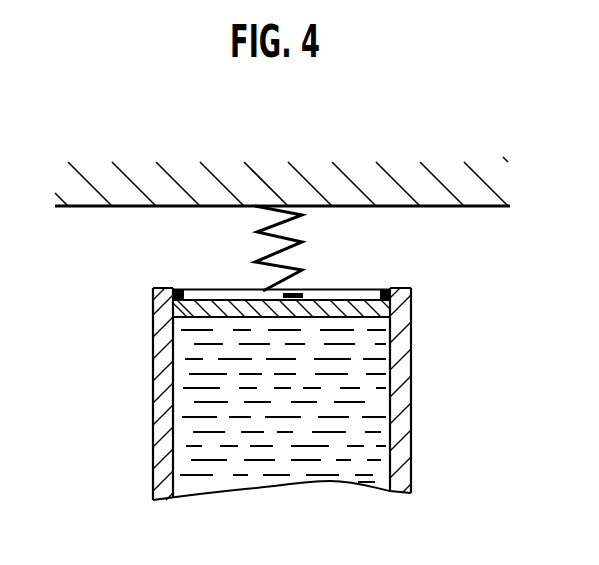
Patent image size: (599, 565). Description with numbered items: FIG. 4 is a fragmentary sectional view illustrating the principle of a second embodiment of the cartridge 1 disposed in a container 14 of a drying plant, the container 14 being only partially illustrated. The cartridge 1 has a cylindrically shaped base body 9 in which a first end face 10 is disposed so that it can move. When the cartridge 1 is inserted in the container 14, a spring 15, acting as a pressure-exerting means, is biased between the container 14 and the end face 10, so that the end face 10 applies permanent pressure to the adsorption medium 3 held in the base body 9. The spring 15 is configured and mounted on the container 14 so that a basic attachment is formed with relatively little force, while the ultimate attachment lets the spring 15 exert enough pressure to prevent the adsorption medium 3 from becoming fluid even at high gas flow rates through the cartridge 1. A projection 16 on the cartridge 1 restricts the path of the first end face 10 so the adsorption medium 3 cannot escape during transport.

The cartridge 1 is at (299, 362).
The adsorption medium 3 is at (187, 415).
The base body 9 is at (402, 453).
The first end face 10 is at (343, 302).
The container 14 is at (338, 182).
The spring 15 is at (292, 266).
The projection 16 is at (176, 289).